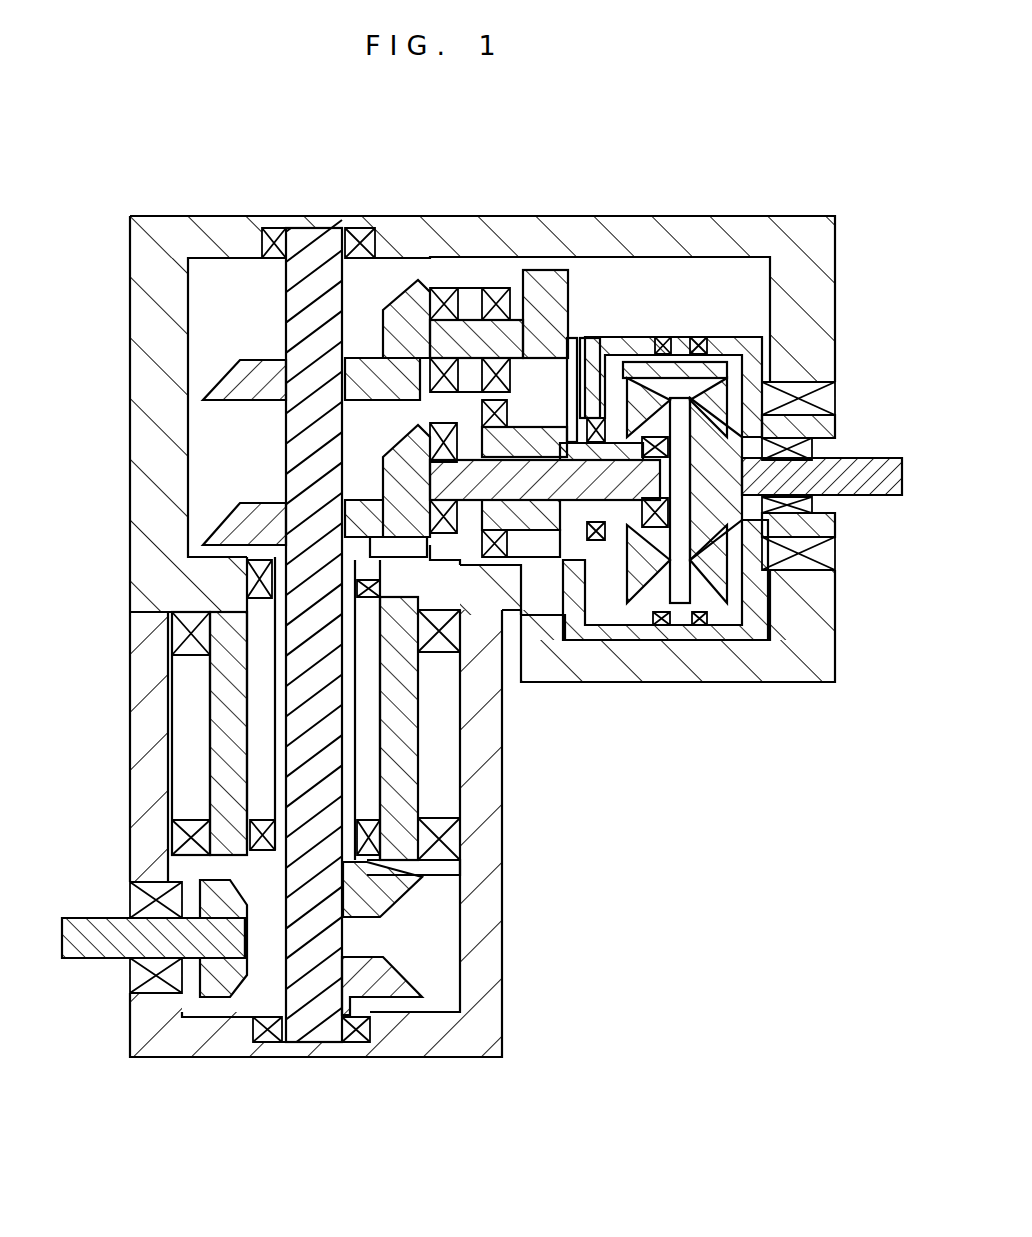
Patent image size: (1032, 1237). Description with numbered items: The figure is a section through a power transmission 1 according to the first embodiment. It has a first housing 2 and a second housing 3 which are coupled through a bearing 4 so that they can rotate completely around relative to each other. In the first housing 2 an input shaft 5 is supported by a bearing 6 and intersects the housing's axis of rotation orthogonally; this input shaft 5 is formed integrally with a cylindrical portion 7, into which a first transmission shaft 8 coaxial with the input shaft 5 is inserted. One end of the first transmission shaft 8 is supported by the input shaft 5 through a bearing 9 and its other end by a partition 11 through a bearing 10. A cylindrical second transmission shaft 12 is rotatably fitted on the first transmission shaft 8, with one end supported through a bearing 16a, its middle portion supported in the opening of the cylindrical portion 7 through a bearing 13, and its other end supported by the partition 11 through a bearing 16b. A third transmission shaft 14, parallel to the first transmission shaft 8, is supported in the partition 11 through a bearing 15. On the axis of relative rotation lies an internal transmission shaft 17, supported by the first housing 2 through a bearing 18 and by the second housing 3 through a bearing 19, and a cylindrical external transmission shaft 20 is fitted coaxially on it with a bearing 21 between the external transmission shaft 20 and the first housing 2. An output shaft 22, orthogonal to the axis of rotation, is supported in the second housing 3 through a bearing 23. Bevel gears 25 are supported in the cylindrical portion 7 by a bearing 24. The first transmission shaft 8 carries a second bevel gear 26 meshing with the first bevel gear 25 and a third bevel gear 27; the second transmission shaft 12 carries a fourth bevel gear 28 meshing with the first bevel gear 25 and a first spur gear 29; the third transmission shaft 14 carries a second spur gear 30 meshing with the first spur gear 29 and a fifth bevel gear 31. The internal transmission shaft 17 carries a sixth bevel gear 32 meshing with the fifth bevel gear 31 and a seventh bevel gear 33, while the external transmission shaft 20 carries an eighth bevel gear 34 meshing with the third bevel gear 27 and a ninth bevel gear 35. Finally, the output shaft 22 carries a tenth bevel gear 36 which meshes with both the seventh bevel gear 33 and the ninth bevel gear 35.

The power transmission 1 is at (396, 214).
The first housing 2 is at (642, 222).
The second housing 3 is at (505, 908).
The bearing 4 is at (438, 655).
The input shaft 5 is at (870, 470).
The bearing 6 is at (822, 550).
The cylindrical portion 7 is at (775, 335).
The first transmission shaft 8 is at (468, 500).
The bearing 9 is at (828, 505).
The bearing 10 is at (440, 420).
The partition 11 is at (458, 270).
The second transmission shaft 12 is at (572, 440).
The bearing 13 is at (600, 440).
The third transmission shaft 14 is at (478, 288).
The bearing 15 is at (500, 288).
The bearing 16a is at (655, 455).
The bearing 16b is at (505, 462).
The internal transmission shaft 17 is at (300, 460).
The bearing 18 is at (272, 228).
The bearing 19 is at (356, 1042).
The external transmission shaft 20 is at (265, 720).
The bearing 21 is at (260, 830).
The output shaft 22 is at (100, 935).
The bearing 23 is at (150, 975).
The bearing 24 is at (692, 337).
The first bevel gear 25 is at (665, 375).
The second bevel gear 26 is at (700, 375).
The third bevel gear 27 is at (382, 482).
The fourth bevel gear 28 is at (640, 570).
The first spur gear 29 is at (545, 555).
The second spur gear 30 is at (558, 270).
The fifth bevel gear 31 is at (397, 305).
The sixth bevel gear 32 is at (238, 372).
The seventh bevel gear 33 is at (400, 970).
The eighth bevel gear 34 is at (222, 515).
The ninth bevel gear 35 is at (398, 893).
The tenth bevel gear 36 is at (215, 1000).